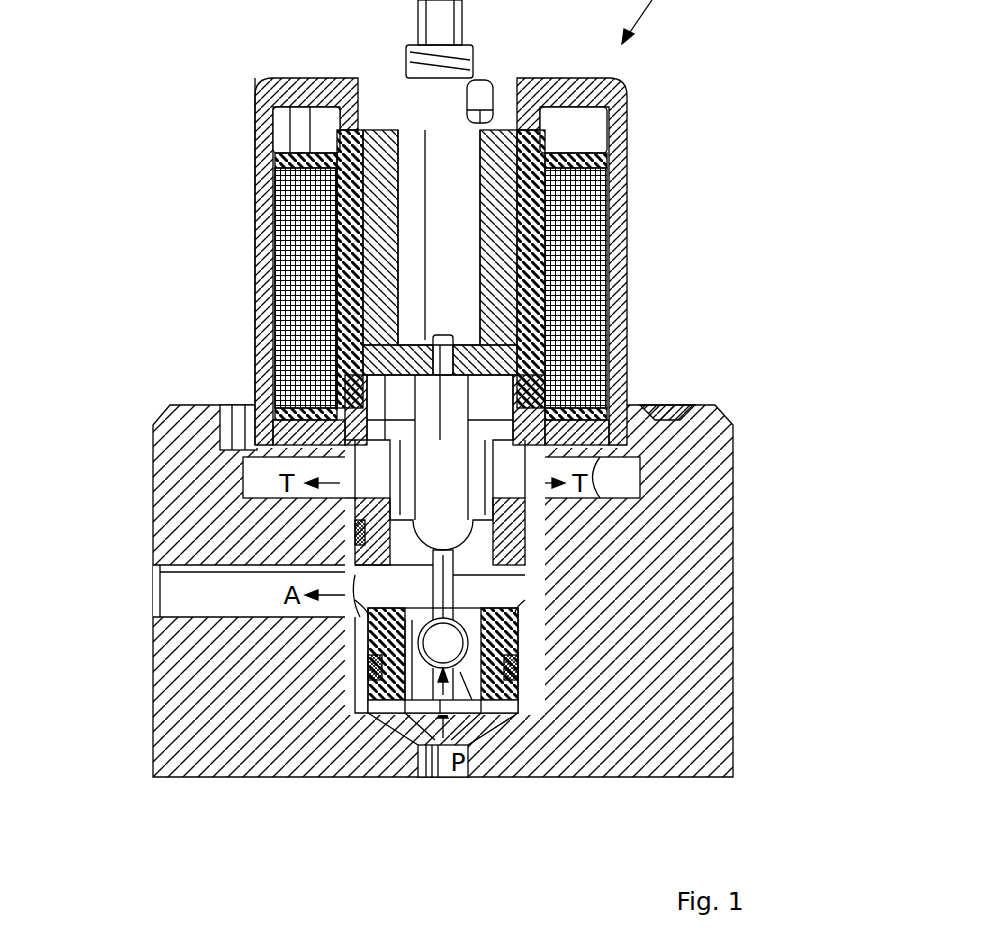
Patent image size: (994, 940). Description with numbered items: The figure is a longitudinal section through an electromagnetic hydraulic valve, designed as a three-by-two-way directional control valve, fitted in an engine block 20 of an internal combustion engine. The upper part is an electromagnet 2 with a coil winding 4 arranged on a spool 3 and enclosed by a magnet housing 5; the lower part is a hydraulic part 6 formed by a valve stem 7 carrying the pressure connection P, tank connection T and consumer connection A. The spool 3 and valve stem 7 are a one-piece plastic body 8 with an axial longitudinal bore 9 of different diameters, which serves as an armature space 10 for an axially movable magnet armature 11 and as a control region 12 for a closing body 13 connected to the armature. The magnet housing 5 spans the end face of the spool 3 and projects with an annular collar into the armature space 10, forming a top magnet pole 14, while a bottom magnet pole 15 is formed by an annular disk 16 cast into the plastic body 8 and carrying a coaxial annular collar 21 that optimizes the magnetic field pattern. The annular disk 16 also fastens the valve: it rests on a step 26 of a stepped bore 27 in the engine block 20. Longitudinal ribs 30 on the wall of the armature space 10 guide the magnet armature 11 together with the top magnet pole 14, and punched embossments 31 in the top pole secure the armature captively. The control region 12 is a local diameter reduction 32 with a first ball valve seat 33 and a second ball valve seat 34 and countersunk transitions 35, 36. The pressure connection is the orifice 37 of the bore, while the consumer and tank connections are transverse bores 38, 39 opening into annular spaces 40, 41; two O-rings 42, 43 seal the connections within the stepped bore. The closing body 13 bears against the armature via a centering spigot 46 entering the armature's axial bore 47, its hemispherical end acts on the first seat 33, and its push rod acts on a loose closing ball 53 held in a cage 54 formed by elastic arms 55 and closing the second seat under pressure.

The electromagnet 2 is at (232, 162).
The spool 3 is at (615, 140).
The coil winding 4 is at (307, 233).
The magnet housing 5 is at (620, 200).
The hydraulic part 6 is at (545, 530).
The valve stem 7 is at (510, 672).
The plastic body 8 is at (618, 397).
The axial longitudinal bore 9 is at (355, 545).
The armature space 10 is at (320, 362).
The magnet armature 11 is at (530, 265).
The control region 12 is at (530, 590).
The closing body 13 is at (640, 470).
The top magnet pole 14 is at (333, 122).
The bottom magnet pole 15 is at (277, 440).
The annular disk 16 is at (718, 410).
The engine block 20 is at (683, 742).
The coaxial annular collar 21 is at (600, 372).
The step 26 is at (227, 440).
The stepped bore 27 is at (600, 487).
The longitudinal ribs 30 is at (280, 272).
The punched embossments 31 is at (485, 98).
The diameter reduction 32 is at (360, 670).
The first ball valve seat 33 is at (360, 597).
The second ball valve seat 34 is at (520, 648).
The countersunk transition 35 is at (360, 710).
The countersunk transition 36 is at (520, 560).
The orifice 37 is at (440, 718).
The transverse bore 38 is at (353, 640).
The transverse bore 39 is at (350, 525).
The annular space 40 is at (520, 617).
The annular space 41 is at (530, 500).
The O-ring 42 is at (270, 590).
The O-ring 43 is at (360, 627).
The centering spigot 46 is at (435, 348).
The axial bore 47 is at (458, 353).
The loose closing ball 53 is at (431, 656).
The cage 54 is at (452, 692).
The elastic arms 55 is at (455, 683).